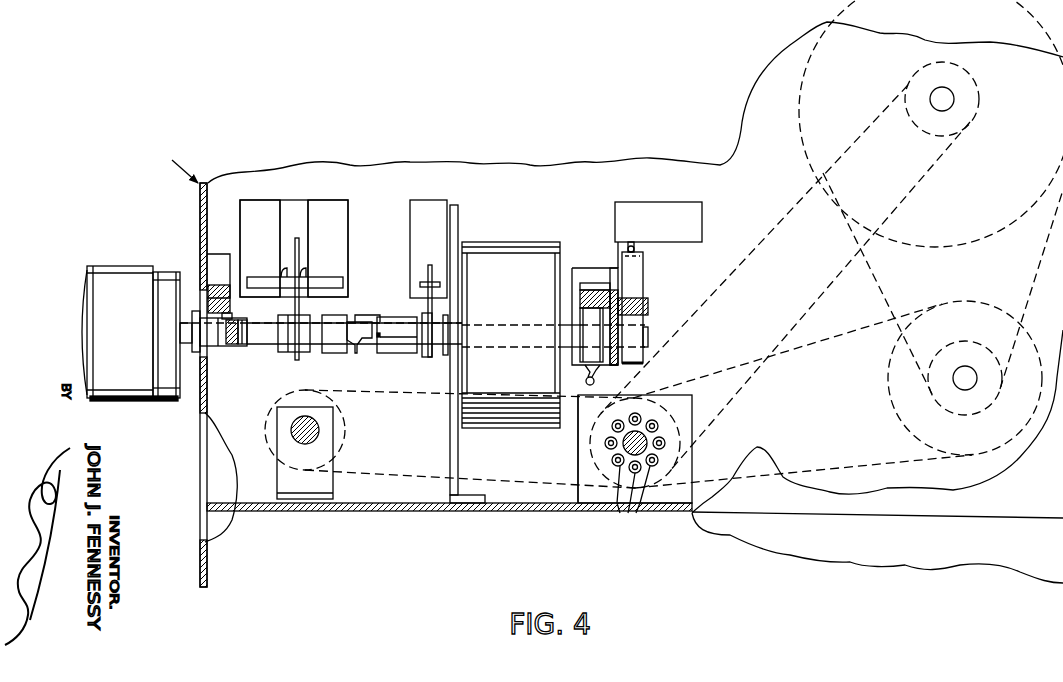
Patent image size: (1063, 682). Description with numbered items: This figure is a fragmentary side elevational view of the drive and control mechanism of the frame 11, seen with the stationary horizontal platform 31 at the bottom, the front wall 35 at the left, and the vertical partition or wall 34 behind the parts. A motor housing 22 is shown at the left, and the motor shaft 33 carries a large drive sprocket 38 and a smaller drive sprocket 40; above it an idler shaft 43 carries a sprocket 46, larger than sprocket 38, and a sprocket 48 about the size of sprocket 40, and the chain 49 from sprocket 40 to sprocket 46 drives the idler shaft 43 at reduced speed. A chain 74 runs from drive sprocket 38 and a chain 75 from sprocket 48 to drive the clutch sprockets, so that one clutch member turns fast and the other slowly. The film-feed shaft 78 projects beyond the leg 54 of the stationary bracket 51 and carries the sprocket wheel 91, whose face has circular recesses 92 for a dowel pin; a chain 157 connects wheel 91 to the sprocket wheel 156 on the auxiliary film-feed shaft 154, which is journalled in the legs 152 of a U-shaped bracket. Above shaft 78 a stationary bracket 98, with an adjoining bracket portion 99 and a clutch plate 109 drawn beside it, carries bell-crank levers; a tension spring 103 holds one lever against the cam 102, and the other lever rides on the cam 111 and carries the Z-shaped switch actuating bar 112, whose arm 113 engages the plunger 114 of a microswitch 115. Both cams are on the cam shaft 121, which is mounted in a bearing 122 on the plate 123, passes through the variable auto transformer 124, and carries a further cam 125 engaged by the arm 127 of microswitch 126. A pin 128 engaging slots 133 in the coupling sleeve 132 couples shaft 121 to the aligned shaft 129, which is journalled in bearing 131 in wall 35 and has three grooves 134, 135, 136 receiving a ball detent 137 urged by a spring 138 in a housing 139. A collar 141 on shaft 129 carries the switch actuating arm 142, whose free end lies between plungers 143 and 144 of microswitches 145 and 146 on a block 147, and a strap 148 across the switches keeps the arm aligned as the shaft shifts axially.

The frame 11 is at (174, 160).
The motor 22 is at (120, 272).
The platform 31 is at (487, 511).
The motor shaft 33 is at (955, 372).
The wall 34 is at (502, 217).
The front wall 35 is at (200, 207).
The drive sprocket 38 is at (990, 304).
The drive sprocket 40 is at (976, 342).
The idler shaft 43 is at (946, 110).
The sprocket 46 is at (990, 232).
The sprocket 48 is at (981, 108).
The chain 49 is at (873, 270).
The bracket 51 is at (576, 451).
The bracket leg 54 is at (578, 471).
The chain 74 is at (805, 347).
The chain 75 is at (826, 297).
The film-feed shaft 78 is at (647, 440).
The sprocket wheel 91 is at (682, 444).
The circular recesses 92 is at (633, 504).
The bracket 98 is at (612, 272).
The clutch member 99 is at (588, 283).
The cam 102 is at (585, 367).
The tension spring 103 is at (598, 368).
The clutch plate 109 is at (649, 304).
The cam 111 is at (640, 356).
The switch actuating bar 112 is at (644, 279).
The arm 113 is at (619, 250).
The plunger 114 is at (634, 249).
The microswitch 115 is at (702, 217).
The cam shaft 121 is at (649, 335).
The bearing 122 is at (441, 356).
The plate 123 is at (450, 440).
The variable auto transformer 124 is at (500, 307).
The cam 125 is at (425, 355).
The microswitch 126 is at (416, 243).
The arm 127 is at (429, 272).
The pin 128 is at (383, 336).
The shaft 129 is at (319, 353).
The bearing 131 is at (213, 353).
The coupling sleeve 132 is at (358, 322).
The slots 133 is at (400, 333).
The circumferential groove 134 is at (226, 341).
The circumferential groove 135 is at (240, 326).
The circumferential groove 136 is at (246, 342).
The ball detent 137 is at (229, 316).
The spring 138 is at (208, 292).
The housing 139 is at (208, 254).
The collar 141 is at (302, 353).
The switch actuating arm 142 is at (299, 306).
The plunger 143 is at (282, 270).
The plunger 144 is at (302, 270).
The microswitch 145 is at (247, 230).
The microswitch 146 is at (317, 230).
The block 147 is at (296, 207).
The strap 148 is at (343, 281).
The bracket legs 152 is at (278, 476).
The auxiliary film-feed shaft 154 is at (320, 436).
The sprocket wheel 156 is at (345, 419).
The chain 157 is at (397, 479).